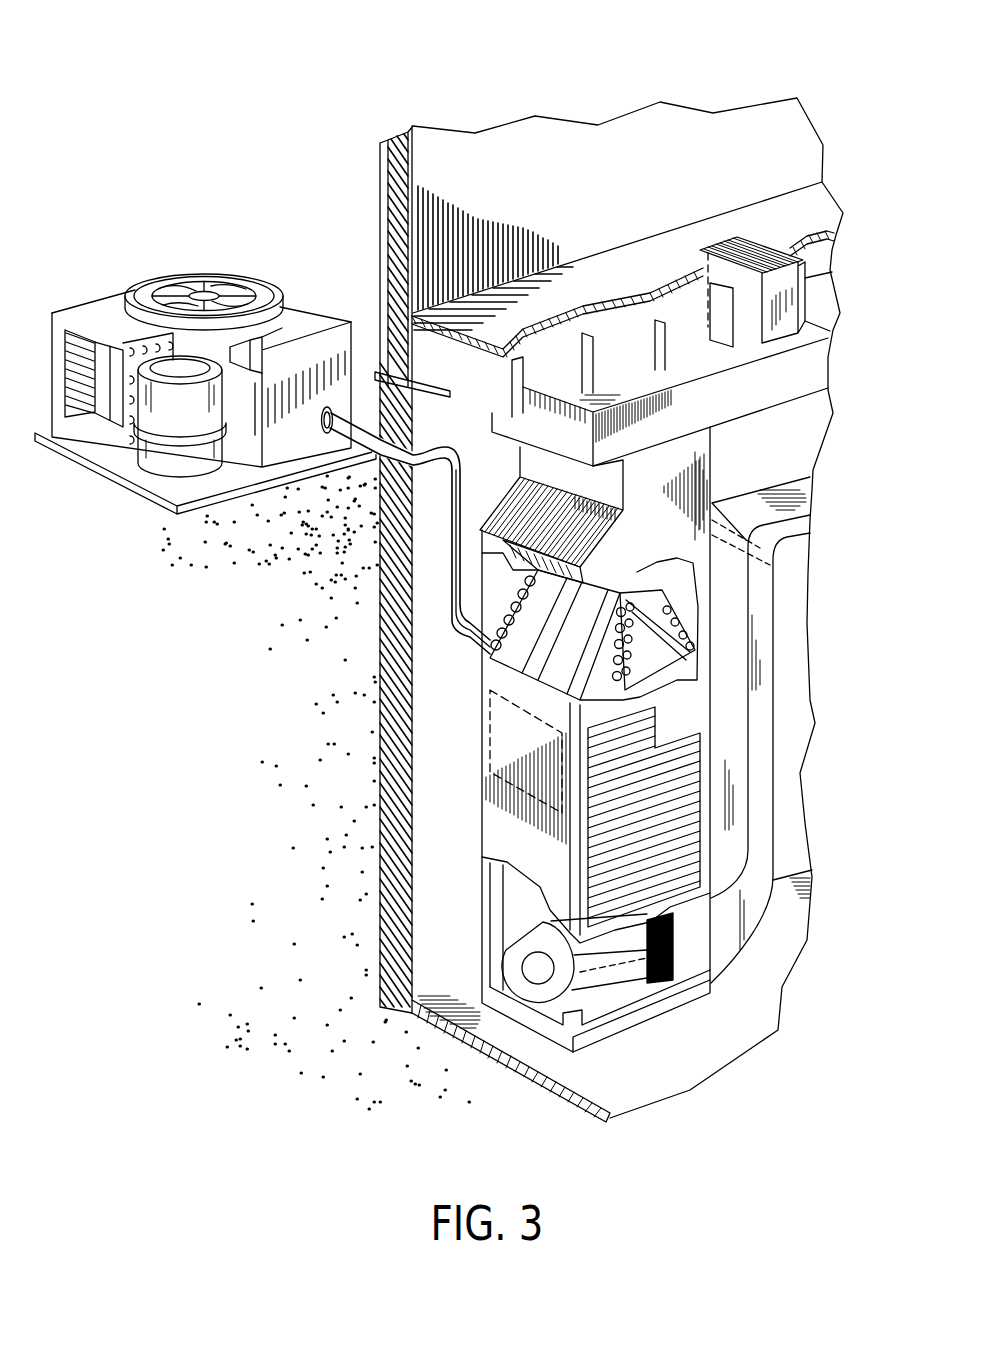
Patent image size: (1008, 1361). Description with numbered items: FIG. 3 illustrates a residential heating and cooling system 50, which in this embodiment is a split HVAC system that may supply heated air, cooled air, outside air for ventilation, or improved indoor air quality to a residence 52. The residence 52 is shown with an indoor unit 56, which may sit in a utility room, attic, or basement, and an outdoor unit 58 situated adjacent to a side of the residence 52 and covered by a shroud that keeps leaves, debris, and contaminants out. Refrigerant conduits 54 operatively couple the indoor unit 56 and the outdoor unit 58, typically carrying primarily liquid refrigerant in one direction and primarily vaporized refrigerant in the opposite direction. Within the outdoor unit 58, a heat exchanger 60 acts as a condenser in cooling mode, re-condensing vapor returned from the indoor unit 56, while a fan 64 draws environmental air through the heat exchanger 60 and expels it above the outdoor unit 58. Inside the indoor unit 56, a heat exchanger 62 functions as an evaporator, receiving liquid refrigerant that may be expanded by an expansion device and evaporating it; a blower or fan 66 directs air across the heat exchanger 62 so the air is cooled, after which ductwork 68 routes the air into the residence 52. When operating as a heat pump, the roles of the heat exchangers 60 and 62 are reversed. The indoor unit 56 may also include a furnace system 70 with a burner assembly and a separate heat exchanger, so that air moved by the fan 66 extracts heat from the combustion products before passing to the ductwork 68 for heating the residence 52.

The residential heating and cooling system 50 is at (204, 93).
The residence 52 is at (520, 148).
The refrigerant conduits 54 is at (445, 540).
The indoor unit 56 is at (460, 793).
The outdoor unit 58 is at (163, 263).
The heat exchanger 60 is at (131, 347).
The heat exchanger 62 is at (542, 662).
The fan 64 is at (222, 292).
The blower or fan 66 is at (532, 988).
The ductwork 68 is at (837, 424).
The furnace system 70 is at (490, 740).